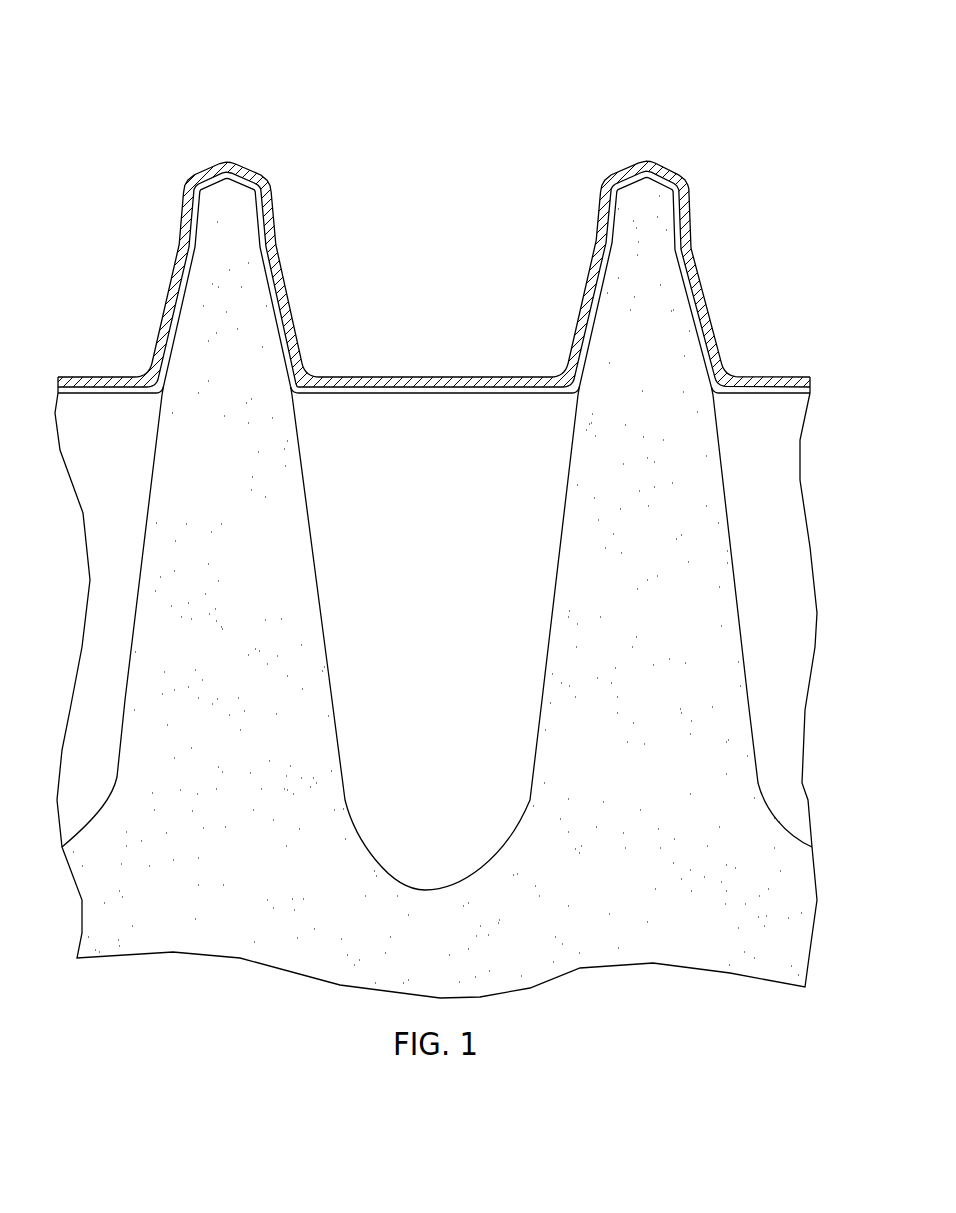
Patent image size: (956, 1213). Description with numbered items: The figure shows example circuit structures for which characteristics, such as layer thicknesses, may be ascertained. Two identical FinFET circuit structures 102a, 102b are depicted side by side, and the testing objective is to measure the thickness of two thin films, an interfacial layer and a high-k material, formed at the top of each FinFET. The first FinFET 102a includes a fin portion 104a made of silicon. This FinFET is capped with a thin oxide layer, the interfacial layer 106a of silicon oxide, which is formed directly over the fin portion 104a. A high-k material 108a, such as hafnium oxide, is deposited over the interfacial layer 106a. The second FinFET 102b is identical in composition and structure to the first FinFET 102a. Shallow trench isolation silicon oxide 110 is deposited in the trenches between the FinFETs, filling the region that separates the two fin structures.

The FinFET circuit structure 102a is at (162, 437).
The FinFET circuit structure 102b is at (645, 126).
The fin portion 104a is at (220, 283).
The interfacial layer 106a is at (265, 222).
The high-k material 108a is at (279, 180).
The shallow trench isolation silicon oxide 110 is at (448, 538).